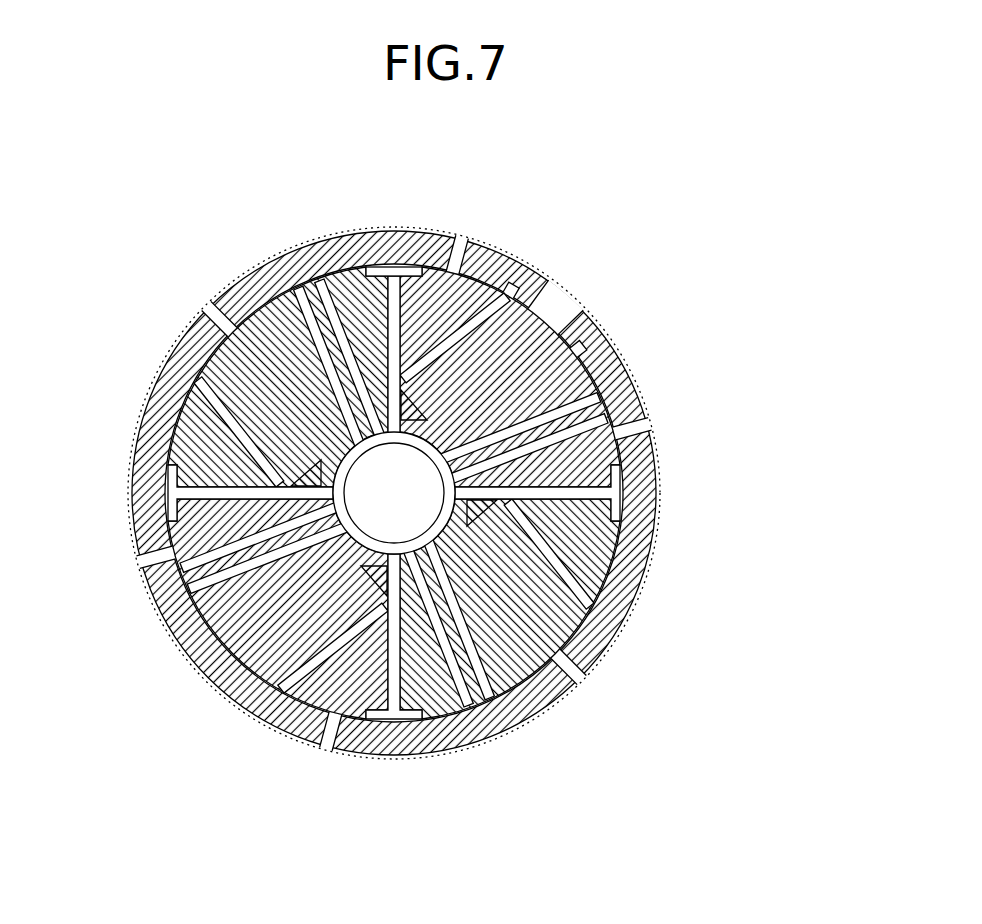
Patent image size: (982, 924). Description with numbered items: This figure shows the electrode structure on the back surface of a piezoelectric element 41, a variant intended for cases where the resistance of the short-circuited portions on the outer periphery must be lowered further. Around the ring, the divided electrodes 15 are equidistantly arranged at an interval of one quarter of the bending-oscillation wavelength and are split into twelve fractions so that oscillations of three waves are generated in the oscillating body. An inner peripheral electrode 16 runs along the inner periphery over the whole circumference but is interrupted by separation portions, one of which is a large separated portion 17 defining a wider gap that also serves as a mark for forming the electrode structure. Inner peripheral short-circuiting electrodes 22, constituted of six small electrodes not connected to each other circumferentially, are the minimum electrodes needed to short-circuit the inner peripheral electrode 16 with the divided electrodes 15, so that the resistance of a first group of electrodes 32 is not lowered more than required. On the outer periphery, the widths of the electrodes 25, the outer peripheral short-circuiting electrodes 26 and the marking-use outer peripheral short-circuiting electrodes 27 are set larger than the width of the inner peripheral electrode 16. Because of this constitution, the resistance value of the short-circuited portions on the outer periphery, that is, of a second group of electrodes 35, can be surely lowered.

The divided electrodes 15 is at (468, 318).
The inner peripheral electrode 16 is at (432, 440).
The large separated portion 17 is at (563, 318).
The inner peripheral short-circuiting electrodes 22 is at (437, 396).
The electrodes 25 is at (455, 262).
The outer peripheral short-circuiting electrodes 26 is at (313, 273).
The marking-use outer peripheral short-circuiting electrodes 27 is at (512, 265).
The first group of electrodes 32 is at (412, 298).
The second group of electrodes 35 is at (402, 298).
The piezoelectric element 41 is at (712, 255).